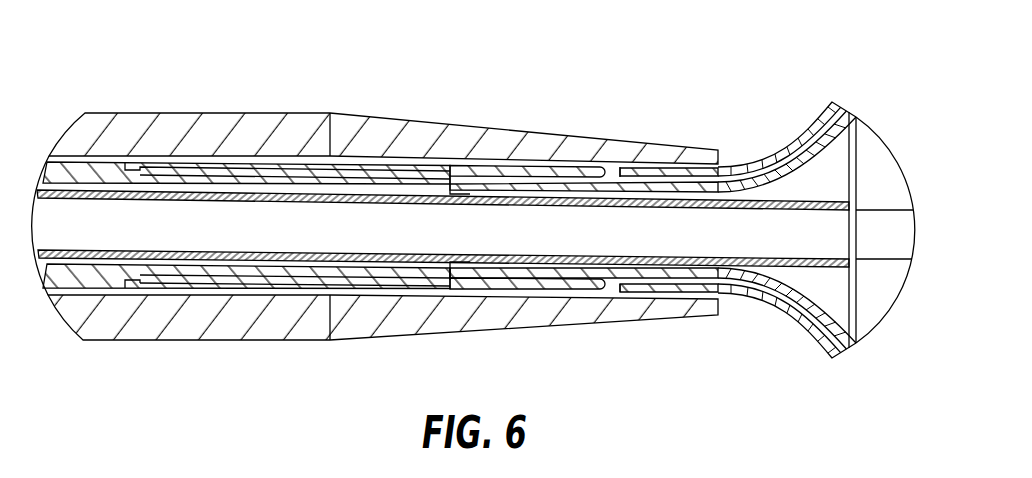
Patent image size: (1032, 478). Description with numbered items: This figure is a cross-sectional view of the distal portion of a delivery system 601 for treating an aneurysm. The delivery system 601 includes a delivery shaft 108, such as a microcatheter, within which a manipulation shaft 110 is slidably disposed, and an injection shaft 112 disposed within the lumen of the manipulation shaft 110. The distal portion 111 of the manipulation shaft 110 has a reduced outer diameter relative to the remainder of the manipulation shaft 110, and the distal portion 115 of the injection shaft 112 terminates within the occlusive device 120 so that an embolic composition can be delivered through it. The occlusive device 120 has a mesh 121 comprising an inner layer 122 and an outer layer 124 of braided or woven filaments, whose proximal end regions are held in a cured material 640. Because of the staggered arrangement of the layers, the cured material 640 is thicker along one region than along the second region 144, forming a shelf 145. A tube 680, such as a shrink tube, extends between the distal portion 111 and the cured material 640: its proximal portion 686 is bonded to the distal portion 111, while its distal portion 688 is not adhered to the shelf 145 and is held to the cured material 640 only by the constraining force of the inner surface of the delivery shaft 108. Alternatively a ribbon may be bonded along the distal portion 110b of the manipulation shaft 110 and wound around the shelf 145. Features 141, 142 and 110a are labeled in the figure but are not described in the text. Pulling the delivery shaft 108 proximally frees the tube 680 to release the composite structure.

The delivery system 601 is at (170, 35).
The delivery shaft 108 is at (137, 127).
The tube 680 is at (200, 167).
The proximal portion of the tube 686 is at (302, 170).
The distal portion of the manipulation shaft 111 is at (362, 186).
The first tube end 141 is at (446, 185).
The distal portion of the tube 688 is at (478, 170).
The shelf 145 is at (532, 186).
The cured material 640 is at (617, 170).
The occlusive device 120 is at (665, 85).
The mesh 121 is at (816, 114).
The outer layer 124 is at (790, 143).
The inner layer 122 is at (748, 185).
The inner tube wall 142 is at (538, 208).
The second region 144 is at (653, 206).
The proximal end of reinforcement layer 110a is at (110, 272).
The injection shaft 112 is at (172, 256).
The manipulation shaft 110 is at (217, 272).
The distal portion of the manipulation shaft 110b is at (305, 272).
The distal portion of the injection shaft 115 is at (454, 277).